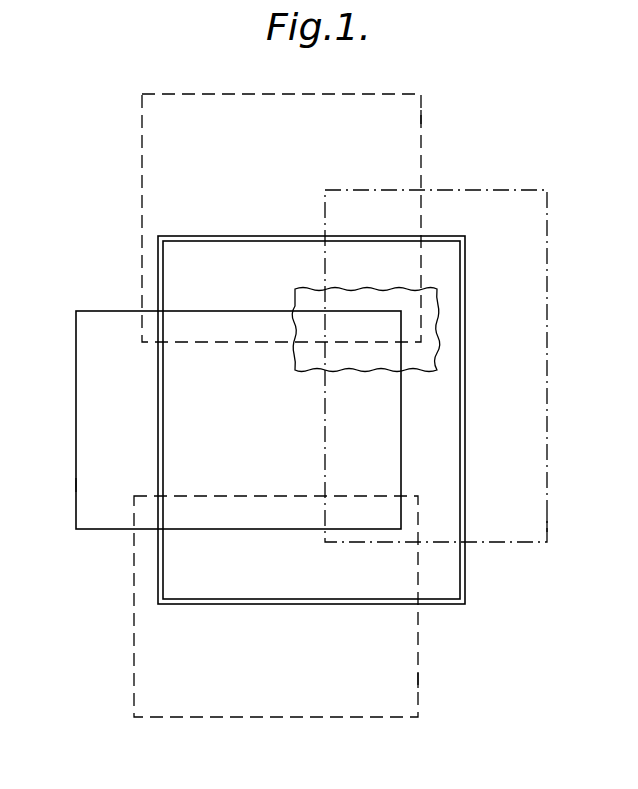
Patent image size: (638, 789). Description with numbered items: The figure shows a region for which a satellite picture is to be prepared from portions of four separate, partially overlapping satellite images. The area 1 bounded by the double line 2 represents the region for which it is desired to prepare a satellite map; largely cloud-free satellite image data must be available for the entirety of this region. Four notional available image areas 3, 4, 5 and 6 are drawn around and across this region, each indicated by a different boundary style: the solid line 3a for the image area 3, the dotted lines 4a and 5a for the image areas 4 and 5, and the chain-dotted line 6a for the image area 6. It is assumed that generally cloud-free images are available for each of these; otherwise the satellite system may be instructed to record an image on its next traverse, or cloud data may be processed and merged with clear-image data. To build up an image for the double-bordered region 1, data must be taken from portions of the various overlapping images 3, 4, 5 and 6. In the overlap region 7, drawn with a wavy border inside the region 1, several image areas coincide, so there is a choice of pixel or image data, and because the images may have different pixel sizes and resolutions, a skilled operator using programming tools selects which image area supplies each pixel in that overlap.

The area 1 is at (195, 282).
The double line 2 is at (466, 398).
The image area 3 is at (110, 361).
The solid line 3a is at (76, 485).
The image area 4 is at (193, 149).
The dotted line 4a is at (421, 117).
The image area 5 is at (182, 695).
The dotted line 5a is at (418, 681).
The image area 6 is at (519, 495).
The chain-dotted line 6a is at (547, 524).
The overlap region 7 is at (437, 323).